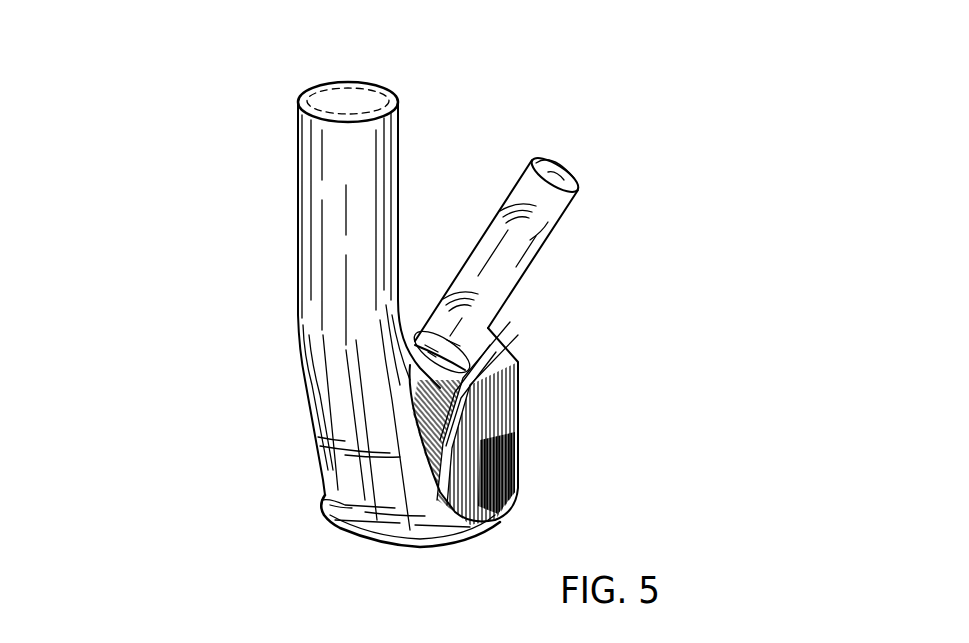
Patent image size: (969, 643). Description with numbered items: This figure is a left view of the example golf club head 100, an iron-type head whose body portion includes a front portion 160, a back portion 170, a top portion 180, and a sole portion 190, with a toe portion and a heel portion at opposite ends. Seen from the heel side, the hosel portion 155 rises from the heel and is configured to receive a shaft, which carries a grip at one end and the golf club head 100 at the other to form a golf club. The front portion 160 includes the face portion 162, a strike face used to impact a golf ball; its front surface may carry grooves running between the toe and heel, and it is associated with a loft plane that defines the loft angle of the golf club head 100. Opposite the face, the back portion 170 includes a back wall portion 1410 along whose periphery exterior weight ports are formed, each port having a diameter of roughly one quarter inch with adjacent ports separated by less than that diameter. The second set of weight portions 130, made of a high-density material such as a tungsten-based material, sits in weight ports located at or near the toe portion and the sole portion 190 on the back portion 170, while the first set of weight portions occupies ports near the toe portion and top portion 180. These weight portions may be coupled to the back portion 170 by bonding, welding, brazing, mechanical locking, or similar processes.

The golf club head 100 is at (258, 78).
The hosel portion 155 is at (312, 166).
The front portion 160 is at (259, 388).
The face portion 162 is at (497, 208).
The top portion 180 is at (571, 148).
The back wall portion 1410 is at (562, 221).
The back portion 170 is at (556, 375).
The second set of weight portions 130 is at (537, 480).
The sole portion 190 is at (375, 552).